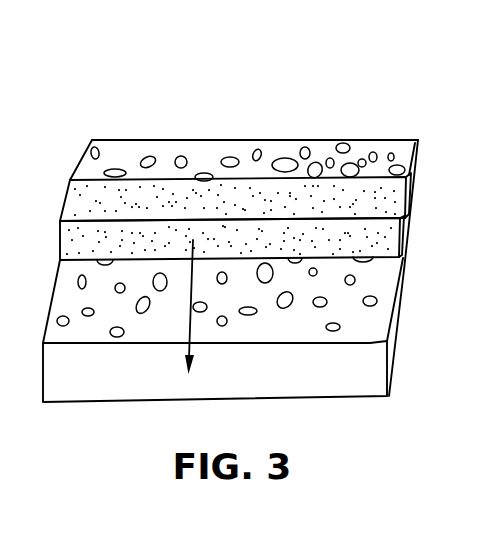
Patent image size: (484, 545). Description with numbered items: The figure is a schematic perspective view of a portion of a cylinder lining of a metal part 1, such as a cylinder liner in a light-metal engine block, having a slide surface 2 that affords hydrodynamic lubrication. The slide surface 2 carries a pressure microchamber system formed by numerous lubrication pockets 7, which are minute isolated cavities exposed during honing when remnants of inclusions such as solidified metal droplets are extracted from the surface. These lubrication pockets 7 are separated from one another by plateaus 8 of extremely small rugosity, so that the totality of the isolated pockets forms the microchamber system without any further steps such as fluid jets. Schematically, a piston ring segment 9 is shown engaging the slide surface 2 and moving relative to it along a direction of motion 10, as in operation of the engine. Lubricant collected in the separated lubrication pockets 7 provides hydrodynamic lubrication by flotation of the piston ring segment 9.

The metal part 1 is at (137, 152).
The slide surface 2 is at (210, 158).
The lubrication pockets 7 is at (318, 168).
The plateaus 8 is at (390, 155).
The piston ring segment 9 is at (167, 193).
The direction of motion 10 is at (190, 322).